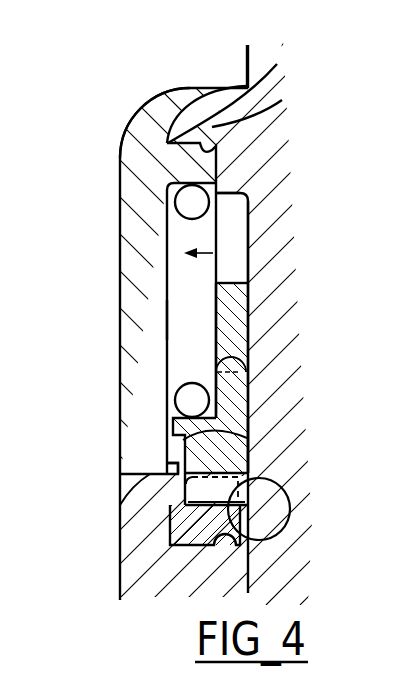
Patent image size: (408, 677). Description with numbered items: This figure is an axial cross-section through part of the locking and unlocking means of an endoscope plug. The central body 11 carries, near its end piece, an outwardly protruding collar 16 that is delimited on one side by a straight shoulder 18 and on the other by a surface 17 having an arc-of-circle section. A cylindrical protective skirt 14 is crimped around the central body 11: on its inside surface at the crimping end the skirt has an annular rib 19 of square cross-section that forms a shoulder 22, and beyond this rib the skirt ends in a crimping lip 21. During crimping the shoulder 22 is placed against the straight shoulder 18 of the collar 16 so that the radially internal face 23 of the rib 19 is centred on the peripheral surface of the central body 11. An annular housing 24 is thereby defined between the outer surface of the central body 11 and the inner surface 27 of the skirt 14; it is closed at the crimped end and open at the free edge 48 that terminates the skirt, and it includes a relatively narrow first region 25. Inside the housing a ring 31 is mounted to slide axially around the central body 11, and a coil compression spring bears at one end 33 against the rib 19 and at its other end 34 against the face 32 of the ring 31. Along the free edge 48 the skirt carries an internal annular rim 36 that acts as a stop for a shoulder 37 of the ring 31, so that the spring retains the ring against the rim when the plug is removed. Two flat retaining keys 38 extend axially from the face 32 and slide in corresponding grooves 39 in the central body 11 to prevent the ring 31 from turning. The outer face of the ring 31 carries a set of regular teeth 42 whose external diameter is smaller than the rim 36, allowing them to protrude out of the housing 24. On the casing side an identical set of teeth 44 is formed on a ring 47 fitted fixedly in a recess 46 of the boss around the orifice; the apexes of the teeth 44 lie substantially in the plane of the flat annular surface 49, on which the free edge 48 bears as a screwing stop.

The central body 11 is at (263, 395).
The cylindrical protective skirt 14 is at (140, 230).
The collar 16 is at (252, 62).
The surface having an arc-of-circle section 17 is at (188, 100).
The shoulder 18 is at (262, 130).
The annular rib 19 is at (138, 158).
The crimping lip 21 is at (150, 120).
The shoulder 22 is at (255, 128).
The radially internal face 23 is at (242, 192).
The annular housing 24 is at (240, 245).
The first region 25 is at (193, 275).
The inner surface 27 is at (180, 310).
The ring 31 is at (245, 477).
The face 32 is at (172, 418).
The end 33 is at (236, 205).
The end 34 is at (242, 367).
The internal annular rim 36 is at (150, 450).
The shoulder 37 is at (258, 433).
The flat retaining keys 38 is at (232, 328).
The grooves 39 is at (247, 273).
The set of teeth 42 is at (272, 492).
The set of teeth 44 is at (275, 542).
The recess 46 is at (220, 556).
The ring 47 is at (147, 537).
The free edge 48 is at (133, 505).
The flat annular surface 49 is at (125, 468).